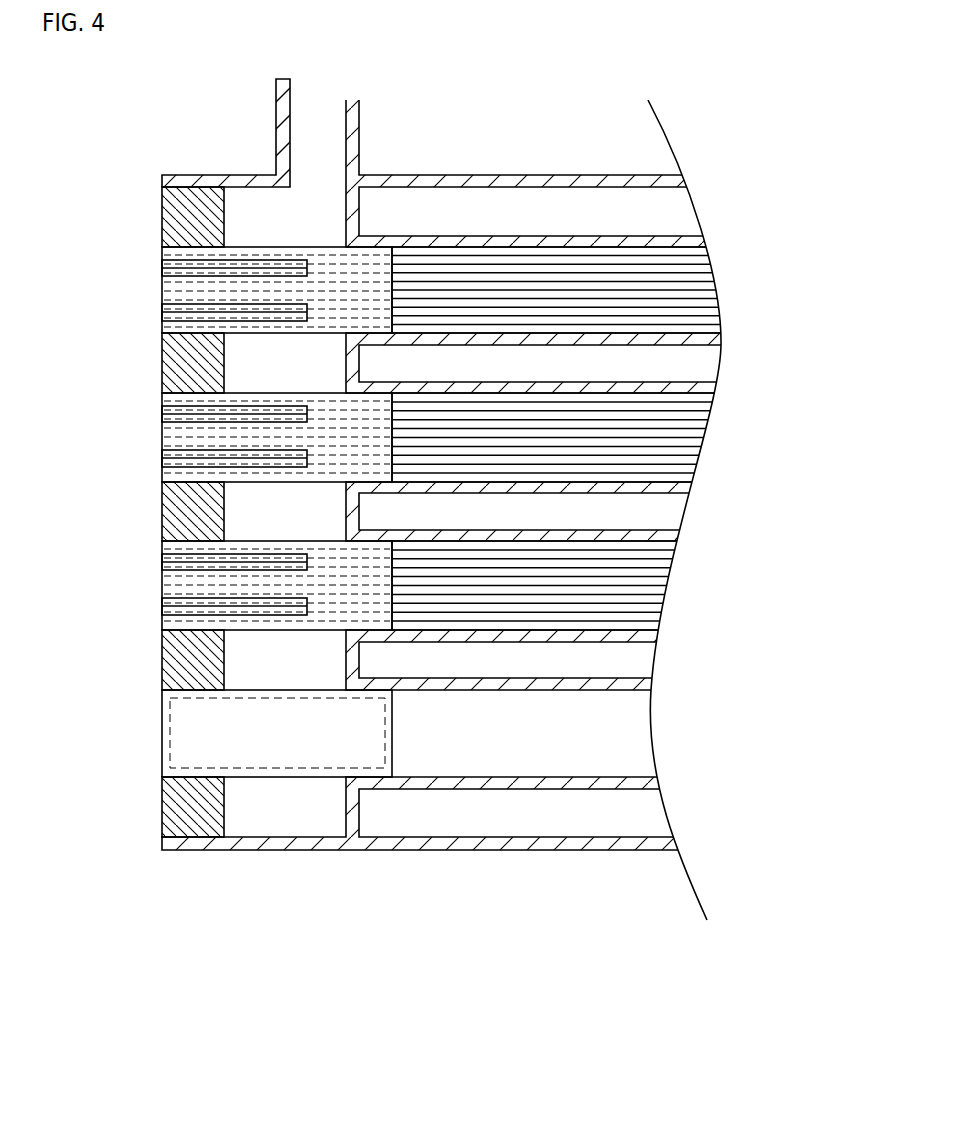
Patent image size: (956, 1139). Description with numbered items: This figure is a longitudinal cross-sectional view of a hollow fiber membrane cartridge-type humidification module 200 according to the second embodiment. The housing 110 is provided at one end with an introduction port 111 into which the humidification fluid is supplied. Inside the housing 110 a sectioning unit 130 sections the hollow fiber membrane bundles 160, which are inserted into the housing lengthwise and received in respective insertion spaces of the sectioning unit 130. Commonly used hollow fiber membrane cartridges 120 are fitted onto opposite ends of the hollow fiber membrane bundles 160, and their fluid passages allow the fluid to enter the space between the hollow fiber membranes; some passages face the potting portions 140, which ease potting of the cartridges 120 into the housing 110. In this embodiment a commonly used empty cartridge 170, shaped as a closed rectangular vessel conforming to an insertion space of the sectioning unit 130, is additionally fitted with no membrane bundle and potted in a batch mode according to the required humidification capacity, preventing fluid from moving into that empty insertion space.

The housing 110 is at (427, 853).
The introduction port 111 is at (360, 138).
The commonly used hollow fiber membrane cartridge 120 is at (167, 587).
The sectioning unit 130 is at (585, 381).
The potting portion 140 is at (187, 216).
The hollow fiber membrane bundle 160 is at (513, 260).
The commonly used empty cartridge 170 is at (187, 732).
The hollow fiber membrane cartridge-type humidification module 200 is at (728, 547).